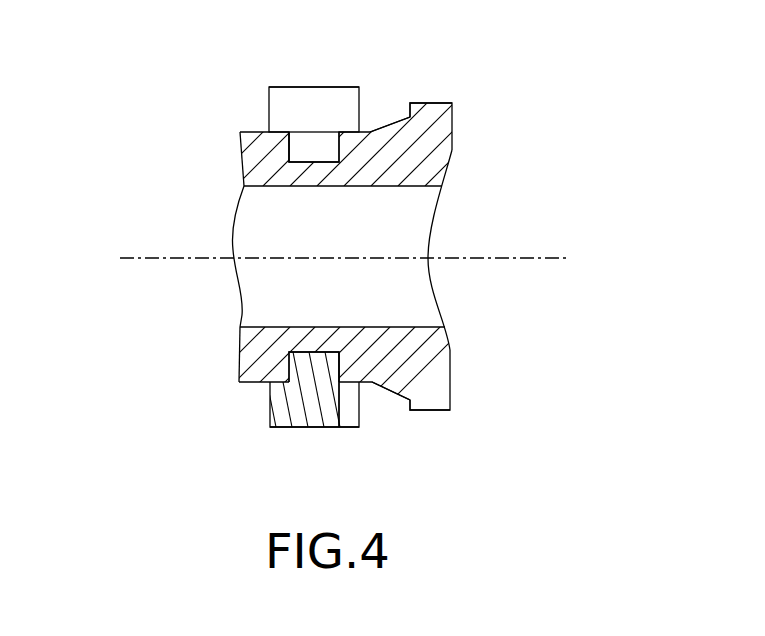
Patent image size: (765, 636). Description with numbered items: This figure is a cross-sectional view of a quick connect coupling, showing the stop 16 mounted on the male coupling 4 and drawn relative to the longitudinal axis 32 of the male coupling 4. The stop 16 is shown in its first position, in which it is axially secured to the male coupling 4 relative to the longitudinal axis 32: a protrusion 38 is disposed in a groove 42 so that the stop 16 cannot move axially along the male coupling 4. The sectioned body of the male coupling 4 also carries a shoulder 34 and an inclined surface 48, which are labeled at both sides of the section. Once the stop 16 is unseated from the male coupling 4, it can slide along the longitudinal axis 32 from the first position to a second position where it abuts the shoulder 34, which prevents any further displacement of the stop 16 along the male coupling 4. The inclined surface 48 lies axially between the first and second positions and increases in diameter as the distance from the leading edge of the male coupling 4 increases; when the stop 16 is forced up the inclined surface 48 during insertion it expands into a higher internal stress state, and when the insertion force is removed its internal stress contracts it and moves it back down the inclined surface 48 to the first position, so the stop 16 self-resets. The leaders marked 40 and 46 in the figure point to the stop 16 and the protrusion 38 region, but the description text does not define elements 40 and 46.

The tubular body 4 is at (383, 188).
The first component 16 is at (345, 103).
The central axis 32 is at (134, 258).
The shoulder 34 is at (414, 110).
The second component 38 is at (308, 367).
The side wall 40 is at (277, 118).
The groove 42 is at (303, 168).
The contact surface 46 is at (328, 72).
The transition region 48 is at (388, 123).